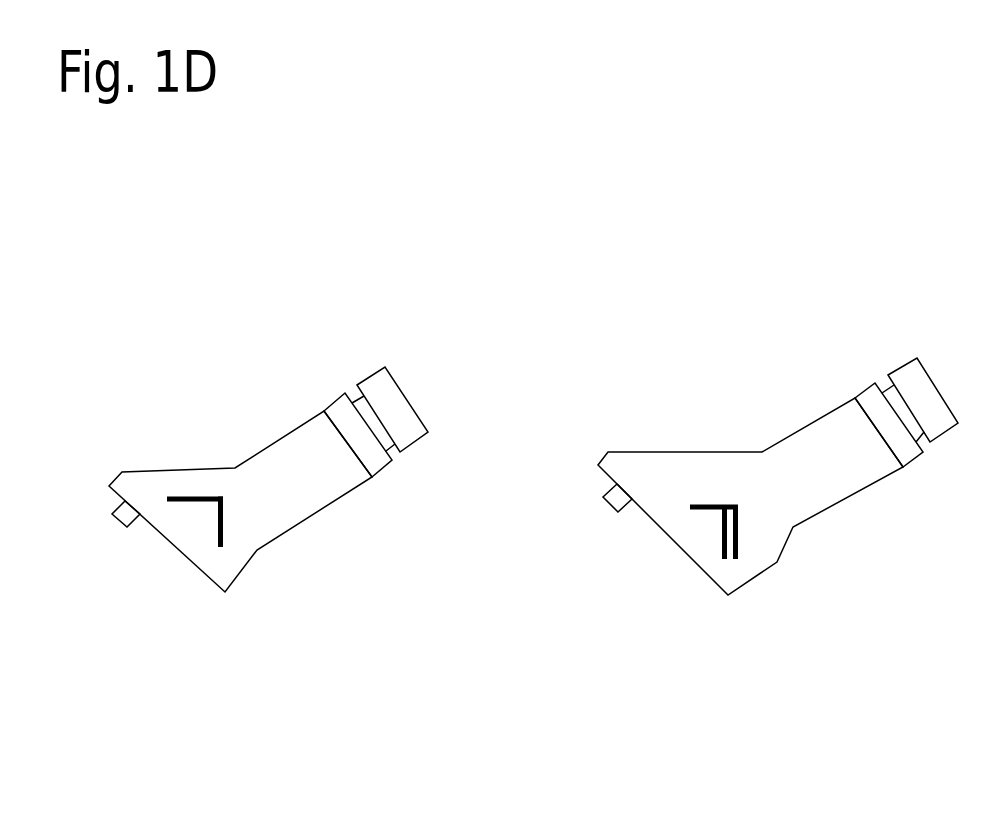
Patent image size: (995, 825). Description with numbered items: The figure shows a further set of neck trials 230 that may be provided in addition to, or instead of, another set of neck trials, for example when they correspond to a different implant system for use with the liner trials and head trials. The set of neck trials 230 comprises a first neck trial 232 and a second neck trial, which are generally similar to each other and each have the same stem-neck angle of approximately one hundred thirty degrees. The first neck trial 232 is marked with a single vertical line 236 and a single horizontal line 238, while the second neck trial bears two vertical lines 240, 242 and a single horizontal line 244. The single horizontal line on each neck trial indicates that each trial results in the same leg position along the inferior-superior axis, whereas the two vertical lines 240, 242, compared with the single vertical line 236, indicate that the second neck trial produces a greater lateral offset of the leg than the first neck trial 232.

The neck trials 230 is at (104, 365).
The first neck trial 232 is at (276, 622).
The single vertical line 236 is at (224, 520).
The single horizontal line 238 is at (197, 497).
The vertical line 240 is at (739, 534).
The vertical line 242 is at (722, 532).
The single horizontal line 244 is at (715, 505).